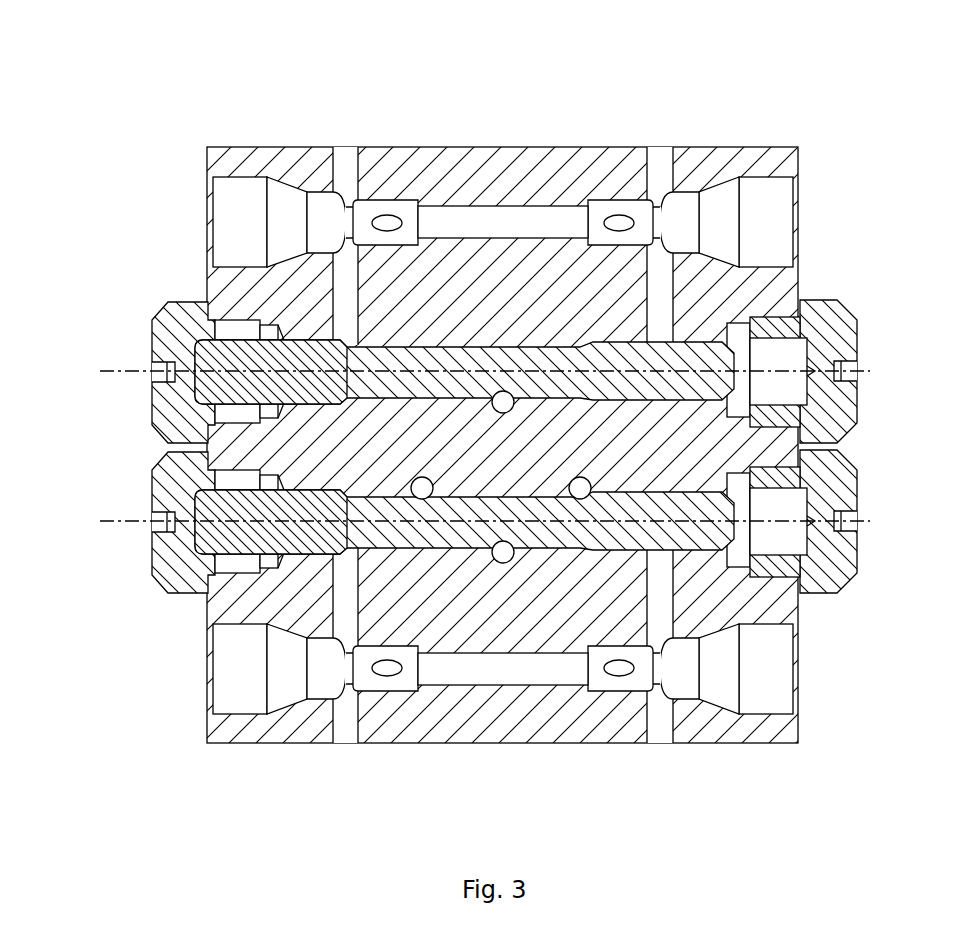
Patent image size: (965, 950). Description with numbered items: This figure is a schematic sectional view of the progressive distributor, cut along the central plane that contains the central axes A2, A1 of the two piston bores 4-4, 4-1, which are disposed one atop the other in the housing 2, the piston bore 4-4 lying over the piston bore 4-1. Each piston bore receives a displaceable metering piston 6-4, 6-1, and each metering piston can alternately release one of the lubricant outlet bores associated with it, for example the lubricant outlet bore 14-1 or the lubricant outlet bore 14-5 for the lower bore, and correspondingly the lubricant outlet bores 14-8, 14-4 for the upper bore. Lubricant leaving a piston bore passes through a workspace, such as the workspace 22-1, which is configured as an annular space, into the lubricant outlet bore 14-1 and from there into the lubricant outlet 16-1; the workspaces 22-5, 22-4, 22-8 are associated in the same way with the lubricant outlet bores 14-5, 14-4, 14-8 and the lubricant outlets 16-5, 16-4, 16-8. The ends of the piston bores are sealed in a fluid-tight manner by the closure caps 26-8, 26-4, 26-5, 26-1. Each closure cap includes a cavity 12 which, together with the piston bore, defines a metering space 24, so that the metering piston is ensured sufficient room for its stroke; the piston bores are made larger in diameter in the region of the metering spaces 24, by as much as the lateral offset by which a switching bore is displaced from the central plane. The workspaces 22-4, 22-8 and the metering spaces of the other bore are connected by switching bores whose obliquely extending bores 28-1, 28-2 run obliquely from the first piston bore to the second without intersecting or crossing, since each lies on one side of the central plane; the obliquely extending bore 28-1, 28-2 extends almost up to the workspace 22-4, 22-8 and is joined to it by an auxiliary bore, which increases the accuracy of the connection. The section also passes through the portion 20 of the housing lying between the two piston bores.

The valve body 2 is at (790, 150).
The piston bore 4-4 is at (720, 323).
The piston bore 4-1 is at (728, 563).
The metering piston 6-4 is at (833, 369).
The metering piston 6-1 is at (833, 488).
The cavity 12 is at (841, 435).
The lubricant outlet bore 14-8 is at (346, 164).
The lubricant outlet bore 14-4 is at (662, 165).
The lubricant outlet bore 14-5 is at (343, 743).
The lubricant outlet bore 14-1 is at (667, 743).
The lubricant outlet 16-8 is at (230, 217).
The lubricant outlet 16-4 is at (782, 198).
The lubricant outlet 16-5 is at (234, 672).
The lubricant outlet 16-1 is at (782, 662).
The intermediate wall 20 is at (375, 488).
The workspace 22-8 is at (412, 332).
The workspace 22-4 is at (572, 332).
The workspace 22-5 is at (398, 556).
The workspace 22-1 is at (563, 556).
The metering space 24 is at (389, 404).
The closure cap 26-8 is at (151, 408).
The closure cap 26-4 is at (855, 320).
The closure cap 26-5 is at (151, 572).
The closure cap 26-1 is at (855, 556).
The obliquely extending bore 28-2 is at (424, 479).
The obliquely extending bore 28-1 is at (582, 478).
The central axis A2 is at (466, 366).
The central axis A1 is at (466, 516).